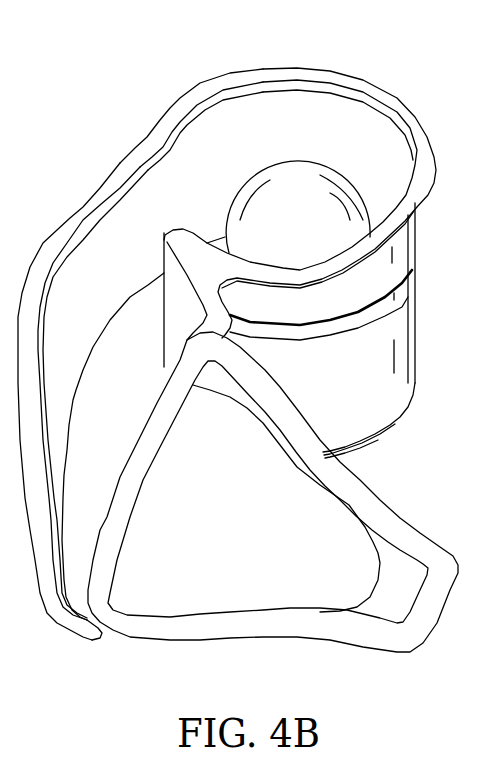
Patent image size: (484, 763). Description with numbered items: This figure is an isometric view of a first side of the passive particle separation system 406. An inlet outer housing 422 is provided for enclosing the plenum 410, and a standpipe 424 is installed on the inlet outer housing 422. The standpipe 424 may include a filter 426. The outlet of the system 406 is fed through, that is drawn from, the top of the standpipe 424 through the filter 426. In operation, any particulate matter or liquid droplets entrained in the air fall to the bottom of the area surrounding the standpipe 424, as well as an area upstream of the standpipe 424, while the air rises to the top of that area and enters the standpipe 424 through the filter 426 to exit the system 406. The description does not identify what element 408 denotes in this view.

The passive particle separation system 406 is at (116, 103).
The base frame 408 is at (292, 592).
The plenum 410 is at (272, 115).
The inlet outer housing 422 is at (77, 222).
The standpipe 424 is at (292, 157).
The filter 426 is at (260, 177).